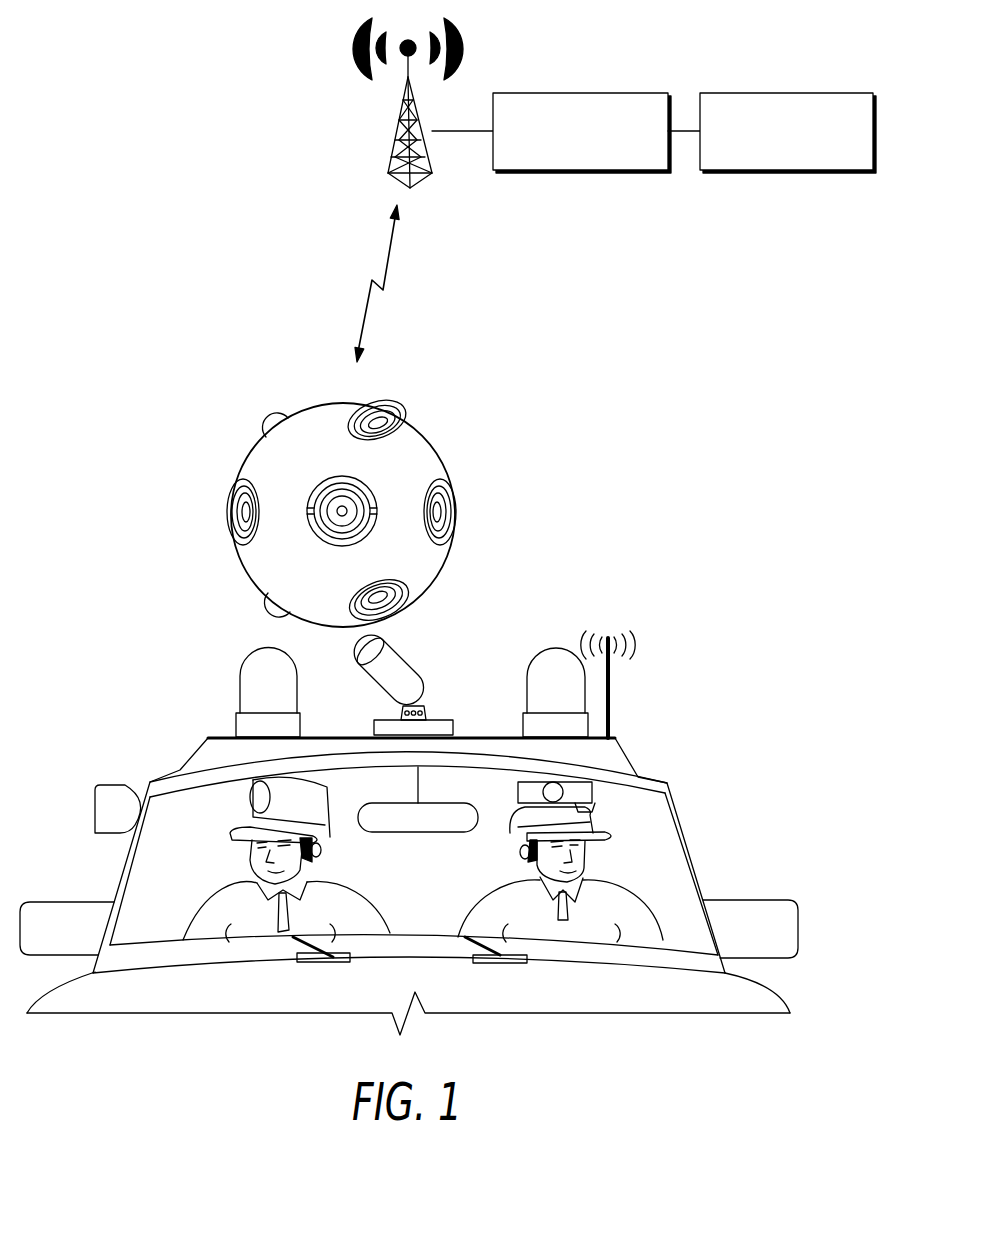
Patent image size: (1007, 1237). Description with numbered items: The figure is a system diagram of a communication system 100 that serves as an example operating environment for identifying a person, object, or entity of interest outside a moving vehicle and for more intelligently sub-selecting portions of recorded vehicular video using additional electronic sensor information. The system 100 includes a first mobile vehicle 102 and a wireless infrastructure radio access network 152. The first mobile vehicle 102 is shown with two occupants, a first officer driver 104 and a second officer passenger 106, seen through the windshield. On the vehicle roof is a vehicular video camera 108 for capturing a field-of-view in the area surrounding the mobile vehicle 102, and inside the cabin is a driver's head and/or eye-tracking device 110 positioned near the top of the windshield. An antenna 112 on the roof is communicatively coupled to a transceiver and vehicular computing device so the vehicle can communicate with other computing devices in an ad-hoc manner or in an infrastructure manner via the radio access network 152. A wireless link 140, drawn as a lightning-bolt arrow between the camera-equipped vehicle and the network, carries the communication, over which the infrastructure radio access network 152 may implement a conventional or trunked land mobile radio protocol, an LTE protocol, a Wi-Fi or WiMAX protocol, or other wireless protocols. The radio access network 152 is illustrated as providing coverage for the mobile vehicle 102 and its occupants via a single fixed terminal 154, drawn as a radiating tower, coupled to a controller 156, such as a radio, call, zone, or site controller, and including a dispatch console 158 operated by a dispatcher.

The system 100 is at (110, 55).
The first mobile vehicle 102 is at (755, 827).
The first officer driver 104 is at (603, 883).
The second officer passenger 106 is at (235, 885).
The vehicular video camera 108 is at (445, 455).
The driver's head and/or eye-tracking device 110 is at (573, 793).
The antenna 112 is at (610, 700).
The wireless link 140 is at (390, 252).
The infrastructure radio access network 152 is at (328, 63).
The fixed terminal 154 is at (397, 144).
The controller 156 is at (580, 93).
The dispatch console 158 is at (787, 93).